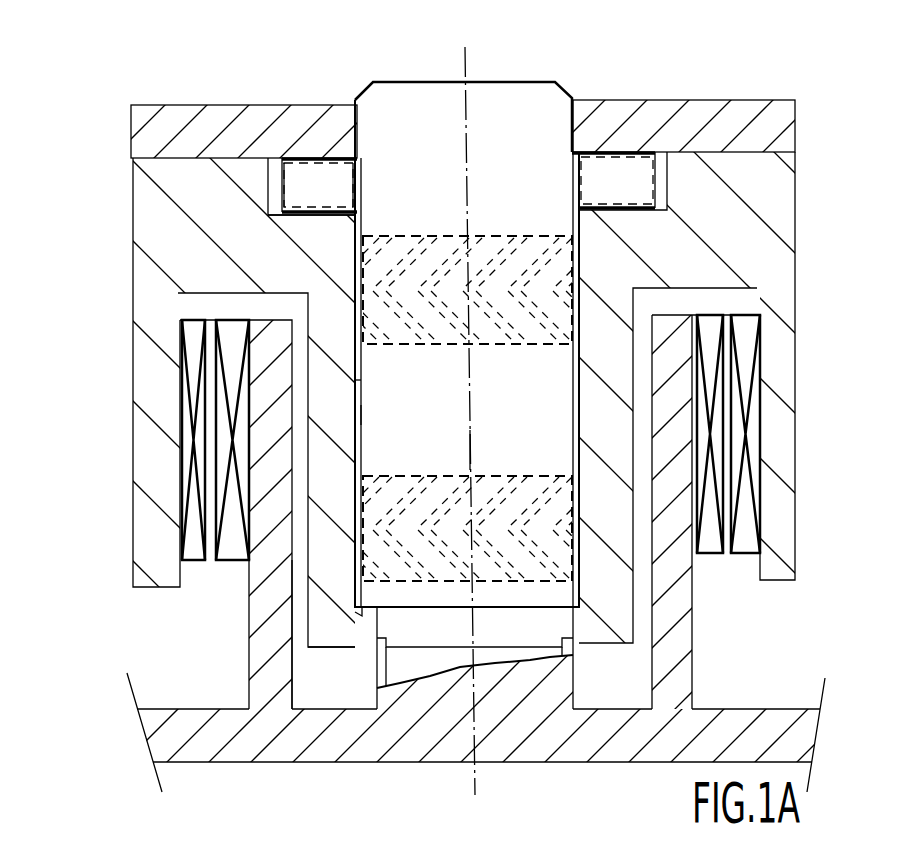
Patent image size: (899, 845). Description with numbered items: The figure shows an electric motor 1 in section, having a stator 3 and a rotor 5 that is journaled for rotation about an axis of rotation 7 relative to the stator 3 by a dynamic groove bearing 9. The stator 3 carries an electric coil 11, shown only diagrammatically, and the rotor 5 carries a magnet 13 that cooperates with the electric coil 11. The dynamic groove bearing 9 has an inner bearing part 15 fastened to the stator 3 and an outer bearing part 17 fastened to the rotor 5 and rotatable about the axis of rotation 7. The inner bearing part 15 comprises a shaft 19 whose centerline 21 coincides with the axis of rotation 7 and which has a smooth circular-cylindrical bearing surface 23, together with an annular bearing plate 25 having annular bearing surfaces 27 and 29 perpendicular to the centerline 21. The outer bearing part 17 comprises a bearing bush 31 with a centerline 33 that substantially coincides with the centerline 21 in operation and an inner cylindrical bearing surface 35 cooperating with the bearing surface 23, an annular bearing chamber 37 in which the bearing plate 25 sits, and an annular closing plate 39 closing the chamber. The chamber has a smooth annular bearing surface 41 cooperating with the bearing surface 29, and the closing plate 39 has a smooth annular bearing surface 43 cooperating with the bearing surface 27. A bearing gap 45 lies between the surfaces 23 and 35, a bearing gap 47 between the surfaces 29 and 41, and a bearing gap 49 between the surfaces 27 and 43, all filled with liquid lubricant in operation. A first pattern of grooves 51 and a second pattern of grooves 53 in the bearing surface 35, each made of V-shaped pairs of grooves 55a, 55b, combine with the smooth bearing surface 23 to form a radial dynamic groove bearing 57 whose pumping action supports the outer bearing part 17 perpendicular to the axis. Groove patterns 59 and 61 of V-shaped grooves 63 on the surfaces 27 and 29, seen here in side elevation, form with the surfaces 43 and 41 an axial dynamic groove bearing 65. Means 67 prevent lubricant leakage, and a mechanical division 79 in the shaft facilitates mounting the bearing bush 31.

The electric motor 1 is at (120, 745).
The stator 3 is at (682, 642).
The rotor 5 is at (770, 195).
The axis of rotation 7 is at (465, 56).
The dynamic groove bearing 9 is at (303, 572).
The electric coil 11 is at (708, 550).
The magnet 13 is at (748, 550).
The inner bearing part 15 is at (572, 80).
The outer bearing part 17 is at (305, 618).
The shaft 19 is at (518, 612).
The centerline 21 is at (473, 410).
The bearing surface 23 is at (362, 445).
The annular bearing plate 25 is at (330, 175).
The annular bearing surface 27 is at (582, 157).
The annular bearing surface 29 is at (617, 205).
The bearing bush 31 is at (597, 390).
The centerline 33 is at (472, 452).
The bearing surface 35 is at (365, 383).
The annular bearing chamber 37 is at (662, 180).
The annular closing plate 39 is at (213, 118).
The annular bearing surface 41 is at (633, 210).
The annular bearing surface 43 is at (627, 150).
The bearing gap 45 is at (362, 412).
The bearing gap 47 is at (320, 215).
The bearing gap 49 is at (340, 157).
The first pattern of grooves 51 is at (433, 234).
The second pattern of grooves 53 is at (425, 586).
The groove 55a is at (510, 257).
The groove 55b is at (508, 315).
The radial dynamic groove bearing 57 is at (352, 383).
The groove pattern 59 is at (357, 162).
The groove pattern 61 is at (358, 208).
The grooves 63 is at (285, 212).
The axial dynamic groove bearing 65 is at (255, 177).
The means for preventing leakage 67 is at (357, 625).
The division 79 is at (432, 648).